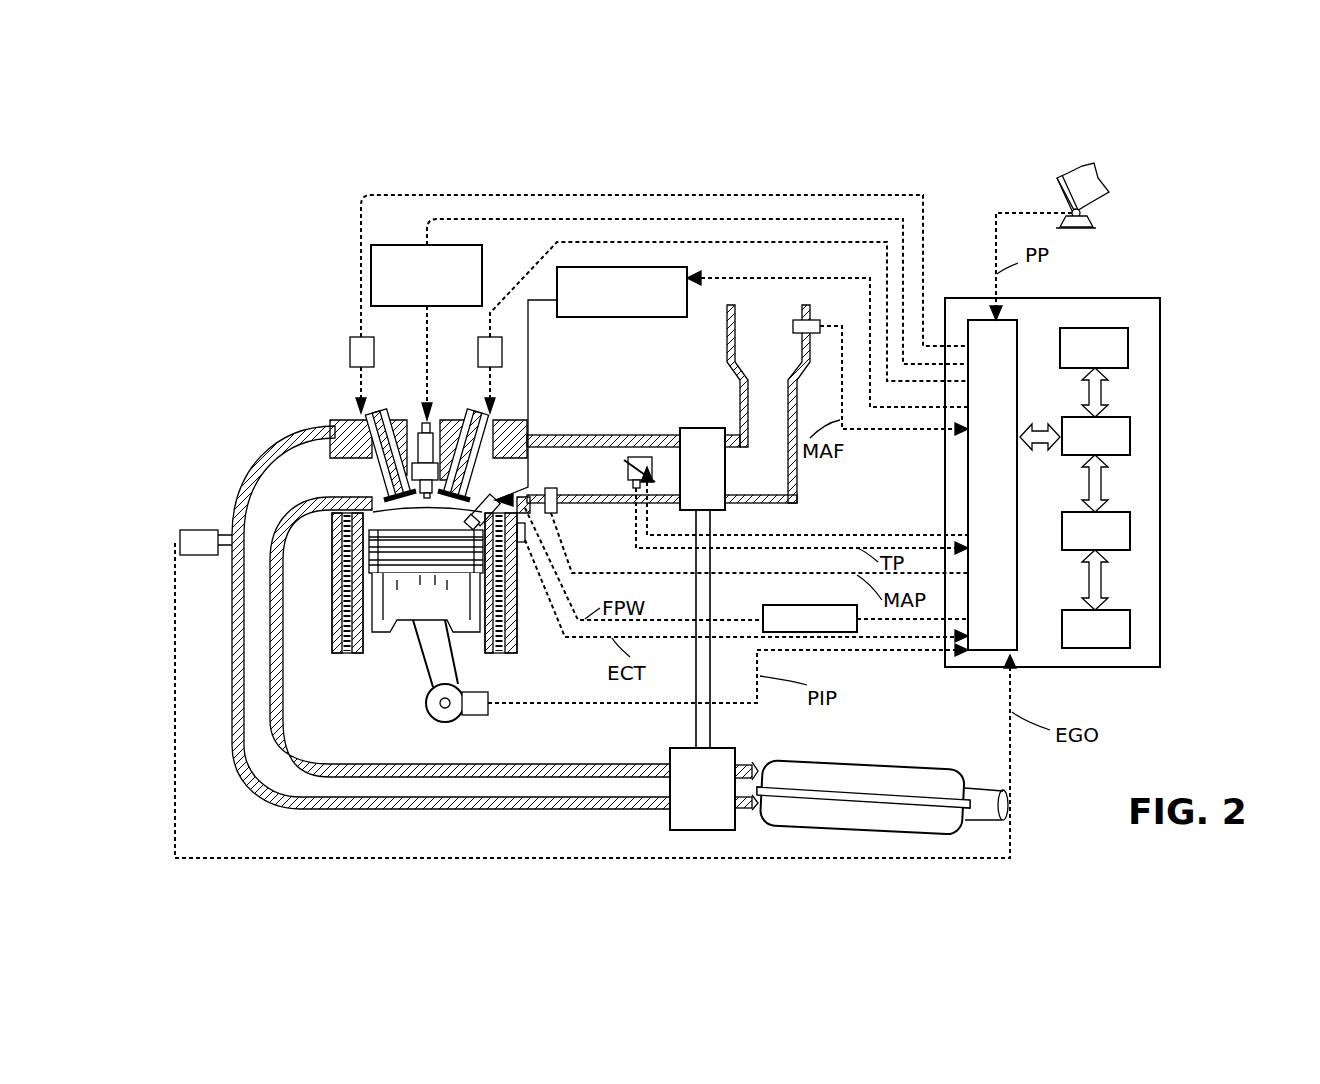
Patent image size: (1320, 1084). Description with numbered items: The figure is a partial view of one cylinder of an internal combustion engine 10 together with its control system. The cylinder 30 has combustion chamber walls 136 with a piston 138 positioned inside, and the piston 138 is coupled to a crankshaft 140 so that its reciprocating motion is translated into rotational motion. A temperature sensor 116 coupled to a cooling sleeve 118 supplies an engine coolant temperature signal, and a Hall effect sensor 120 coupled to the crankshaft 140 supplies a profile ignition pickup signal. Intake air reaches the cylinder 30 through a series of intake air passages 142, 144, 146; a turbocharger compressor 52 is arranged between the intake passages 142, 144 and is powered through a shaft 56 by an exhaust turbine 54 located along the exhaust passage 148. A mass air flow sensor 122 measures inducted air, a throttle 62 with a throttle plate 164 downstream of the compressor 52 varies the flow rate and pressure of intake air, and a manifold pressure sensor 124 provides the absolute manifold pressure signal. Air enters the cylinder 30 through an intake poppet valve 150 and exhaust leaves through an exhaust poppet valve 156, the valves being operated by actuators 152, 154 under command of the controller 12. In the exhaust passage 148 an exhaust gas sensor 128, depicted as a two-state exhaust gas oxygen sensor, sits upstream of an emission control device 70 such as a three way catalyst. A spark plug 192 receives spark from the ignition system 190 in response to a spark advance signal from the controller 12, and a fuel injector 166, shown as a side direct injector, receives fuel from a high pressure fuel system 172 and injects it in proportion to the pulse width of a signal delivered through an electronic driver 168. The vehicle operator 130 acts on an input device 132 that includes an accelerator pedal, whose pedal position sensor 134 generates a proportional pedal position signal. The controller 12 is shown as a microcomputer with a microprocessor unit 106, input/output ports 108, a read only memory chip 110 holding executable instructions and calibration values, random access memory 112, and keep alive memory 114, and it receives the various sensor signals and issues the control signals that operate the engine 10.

The internal combustion engine 10 is at (264, 372).
The controller 12 is at (1153, 298).
The cylinder 30 is at (423, 513).
The compressor 52 is at (687, 428).
The exhaust turbine 54 is at (670, 817).
The shaft 56 is at (700, 712).
The throttle 62 is at (633, 484).
The emission control device 70 is at (927, 768).
The microprocessor unit 106 is at (1130, 435).
The input/output ports 108 is at (1018, 327).
The read only memory chip 110 is at (1130, 345).
The random access memory 112 is at (1130, 532).
The keep alive memory 114 is at (1130, 632).
The temperature sensor 116 is at (521, 572).
The cooling sleeve 118 is at (513, 632).
The Hall effect sensor 120 is at (478, 717).
The mass air flow sensor 122 is at (813, 323).
The manifold pressure sensor 124 is at (553, 516).
The exhaust gas sensor 128 is at (178, 533).
The vehicle operator 130 is at (1103, 177).
The input device 132 is at (1060, 195).
The pedal position sensor 134 is at (1087, 213).
The combustion chamber walls 136 is at (372, 645).
The piston 138 is at (408, 607).
The crankshaft 140 is at (437, 718).
The intake air passage 142 is at (780, 354).
The intake air passage 144 is at (667, 468).
The intake air passage 146 is at (557, 481).
The exhaust passage 148 is at (317, 491).
The intake poppet valve 150 is at (457, 490).
The actuator 152 is at (478, 352).
The actuator 154 is at (350, 344).
The exhaust poppet valve 156 is at (385, 494).
The throttle plate 164 is at (655, 485).
The fuel injector 166 is at (716, 547).
The electronic driver 168 is at (768, 605).
The high pressure fuel system 172 is at (617, 317).
The ignition system 190 is at (384, 245).
The spark plug 192 is at (421, 455).